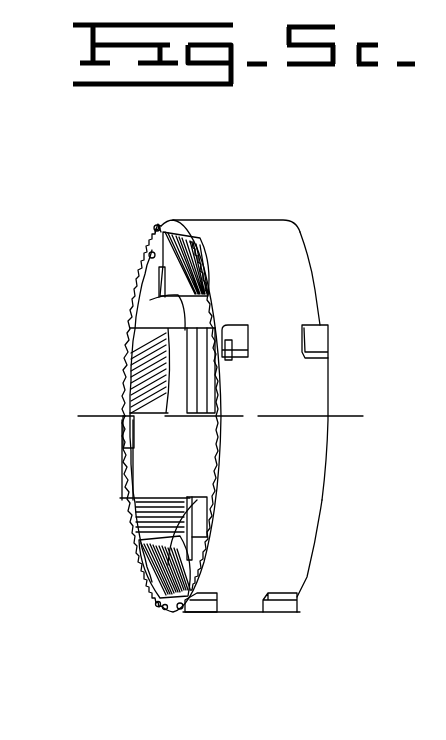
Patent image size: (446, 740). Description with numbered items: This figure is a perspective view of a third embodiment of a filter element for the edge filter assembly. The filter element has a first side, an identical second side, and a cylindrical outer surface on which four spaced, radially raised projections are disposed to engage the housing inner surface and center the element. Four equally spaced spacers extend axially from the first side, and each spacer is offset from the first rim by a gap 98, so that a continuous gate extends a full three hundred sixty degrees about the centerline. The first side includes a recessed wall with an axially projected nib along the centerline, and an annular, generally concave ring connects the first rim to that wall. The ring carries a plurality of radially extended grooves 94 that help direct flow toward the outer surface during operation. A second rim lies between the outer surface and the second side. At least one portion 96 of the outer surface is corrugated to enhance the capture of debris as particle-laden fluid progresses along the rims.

The radially extended grooves 94 is at (130, 331).
The gap 98 is at (150, 252).
The corrugated portion 96 is at (157, 605).